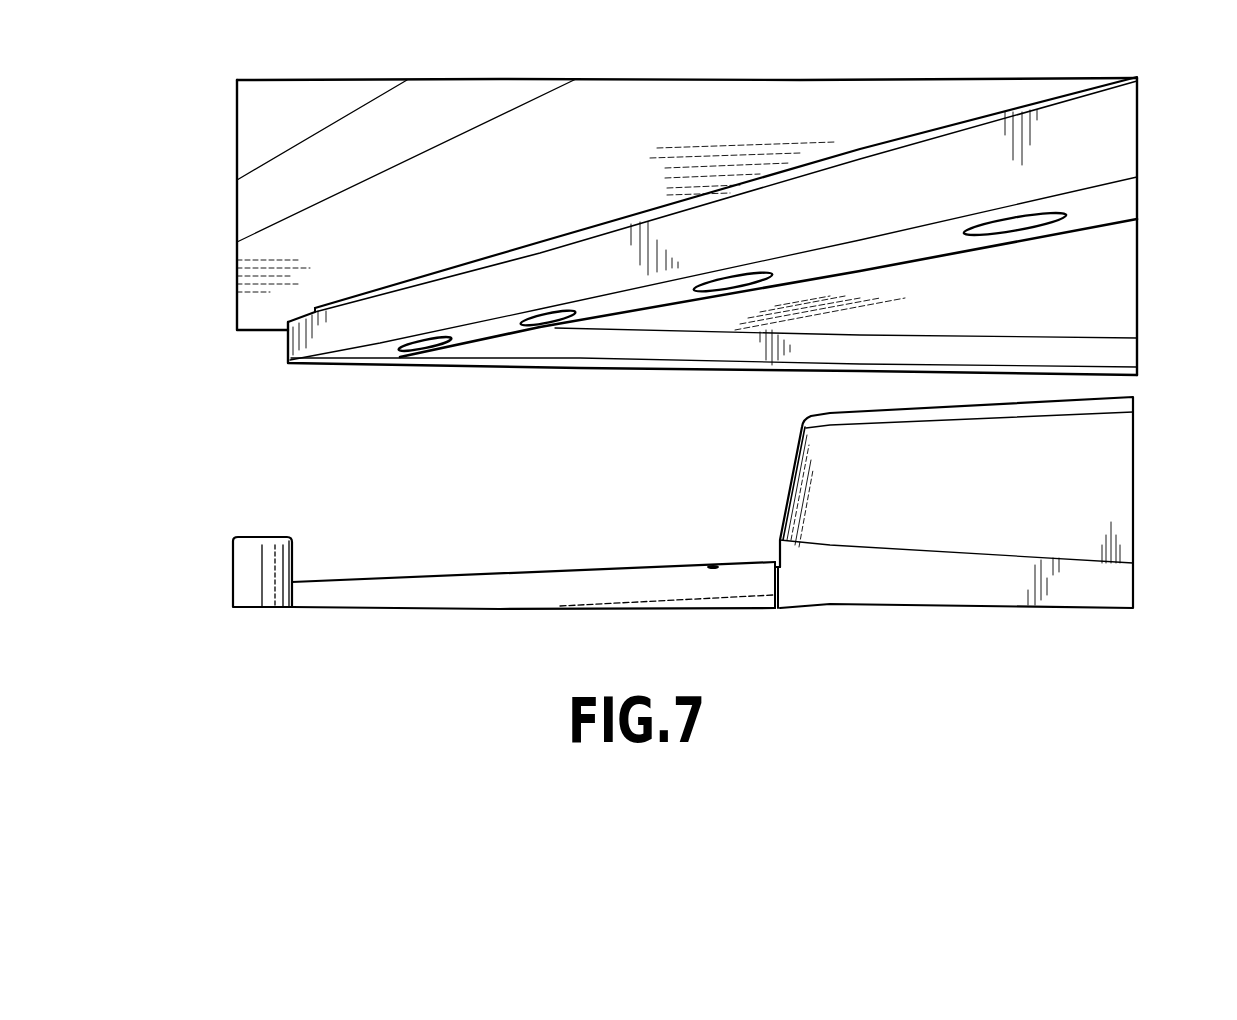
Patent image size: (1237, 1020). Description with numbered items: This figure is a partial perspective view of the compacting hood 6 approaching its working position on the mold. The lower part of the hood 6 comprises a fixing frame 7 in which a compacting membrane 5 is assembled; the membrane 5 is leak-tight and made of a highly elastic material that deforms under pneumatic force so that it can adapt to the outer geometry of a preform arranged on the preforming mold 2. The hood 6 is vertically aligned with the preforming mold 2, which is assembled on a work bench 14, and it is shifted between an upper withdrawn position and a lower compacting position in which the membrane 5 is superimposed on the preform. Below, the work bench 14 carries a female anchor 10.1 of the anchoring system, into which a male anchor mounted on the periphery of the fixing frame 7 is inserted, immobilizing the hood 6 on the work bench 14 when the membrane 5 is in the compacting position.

The compacting hood 6 is at (861, 107).
The fixing frame 7 is at (1075, 138).
The compacting membrane 5 is at (1068, 273).
The preforming mold 2 is at (1033, 490).
The work bench 14 is at (560, 570).
The female anchor 10.1 is at (257, 561).